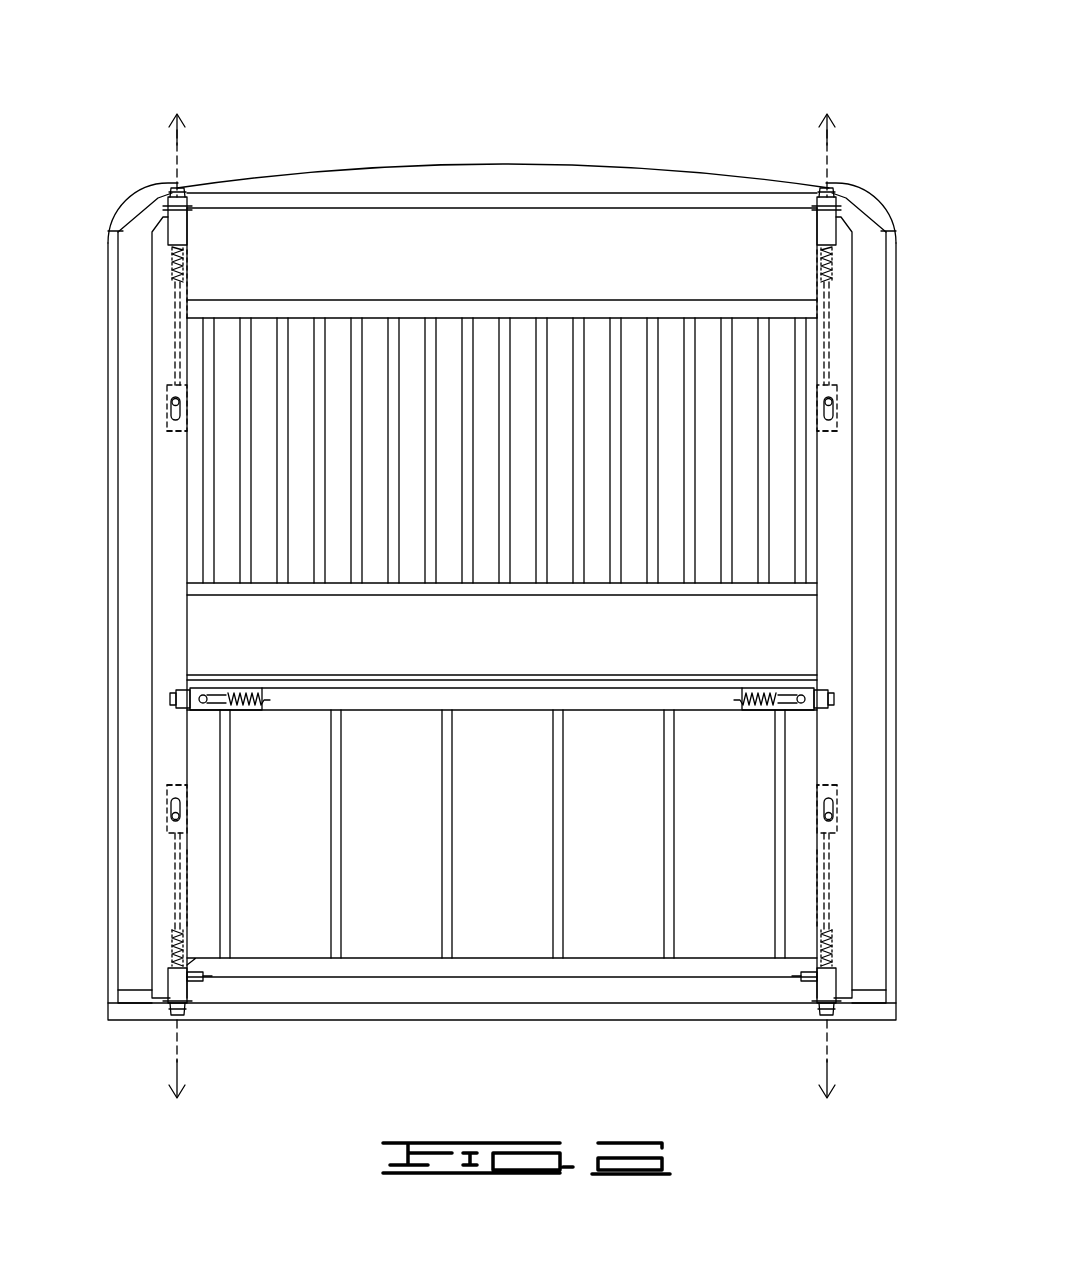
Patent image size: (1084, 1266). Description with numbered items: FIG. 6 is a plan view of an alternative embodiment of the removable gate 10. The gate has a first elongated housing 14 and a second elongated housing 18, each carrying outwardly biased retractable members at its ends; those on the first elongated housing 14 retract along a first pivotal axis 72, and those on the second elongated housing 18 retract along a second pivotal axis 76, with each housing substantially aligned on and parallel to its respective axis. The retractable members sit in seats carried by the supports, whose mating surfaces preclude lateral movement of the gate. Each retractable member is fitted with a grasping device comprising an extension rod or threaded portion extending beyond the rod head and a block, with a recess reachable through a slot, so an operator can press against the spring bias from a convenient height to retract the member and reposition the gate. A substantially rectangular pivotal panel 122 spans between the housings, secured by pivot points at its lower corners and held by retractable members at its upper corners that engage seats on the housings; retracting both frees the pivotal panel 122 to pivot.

The removable gate 10 is at (328, 62).
The first elongated housing 14 is at (152, 590).
The second elongated housing 18 is at (881, 603).
The first pivotal axis 72 is at (176, 611).
The second pivotal axis 76 is at (826, 611).
The pivotal panel 122 is at (477, 690).